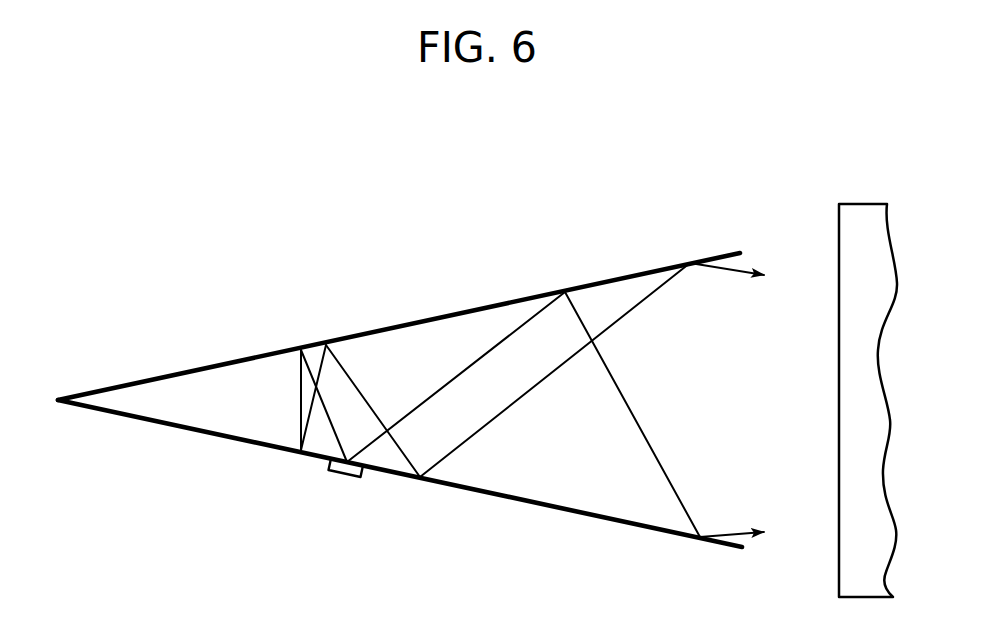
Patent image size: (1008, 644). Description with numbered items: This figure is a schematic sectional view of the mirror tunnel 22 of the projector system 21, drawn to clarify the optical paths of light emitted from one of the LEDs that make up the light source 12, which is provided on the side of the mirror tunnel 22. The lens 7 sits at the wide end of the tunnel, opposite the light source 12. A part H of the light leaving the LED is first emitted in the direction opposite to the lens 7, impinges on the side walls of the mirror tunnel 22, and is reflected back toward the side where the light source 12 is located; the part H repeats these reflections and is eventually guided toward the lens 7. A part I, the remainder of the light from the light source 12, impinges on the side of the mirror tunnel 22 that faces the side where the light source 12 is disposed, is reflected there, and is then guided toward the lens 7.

The light guide plate 21 is at (646, 193).
The mirror tunnel 22 is at (507, 302).
The light source 12 is at (341, 479).
The lens 7 is at (870, 203).
The part H of light H is at (347, 458).
The part I of light I is at (447, 383).